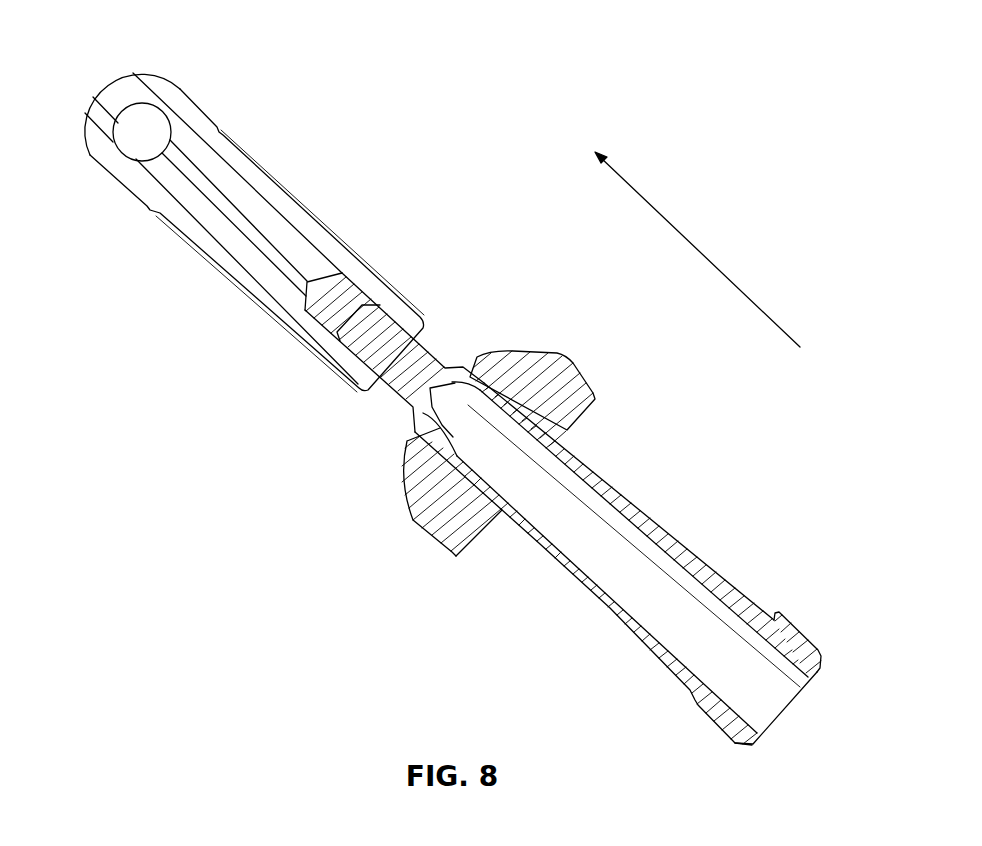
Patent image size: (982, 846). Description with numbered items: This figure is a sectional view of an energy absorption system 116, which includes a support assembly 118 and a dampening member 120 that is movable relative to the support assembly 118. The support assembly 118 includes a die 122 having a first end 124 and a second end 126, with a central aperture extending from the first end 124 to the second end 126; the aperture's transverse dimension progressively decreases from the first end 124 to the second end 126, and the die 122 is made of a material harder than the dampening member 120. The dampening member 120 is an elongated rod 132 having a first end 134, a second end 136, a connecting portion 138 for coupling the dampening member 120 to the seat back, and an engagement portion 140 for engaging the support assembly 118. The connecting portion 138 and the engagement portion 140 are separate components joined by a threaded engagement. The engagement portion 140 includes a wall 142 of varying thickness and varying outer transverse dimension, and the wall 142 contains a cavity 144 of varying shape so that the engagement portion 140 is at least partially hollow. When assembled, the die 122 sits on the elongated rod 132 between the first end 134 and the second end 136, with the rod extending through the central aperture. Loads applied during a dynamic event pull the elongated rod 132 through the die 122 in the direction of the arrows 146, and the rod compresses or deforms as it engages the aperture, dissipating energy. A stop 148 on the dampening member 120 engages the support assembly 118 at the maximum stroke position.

The energy absorption system 116 is at (413, 153).
The support assembly 118 is at (577, 373).
The dampening member 120 is at (248, 195).
The die 122 is at (435, 518).
The first end 124 is at (477, 553).
The second end 126 is at (410, 442).
The elongated rod 132 is at (622, 507).
The first end 134 is at (113, 87).
The second end 136 is at (812, 678).
The connecting portion 138 is at (232, 247).
The engagement portion 140 is at (657, 643).
The wall 142 is at (738, 607).
The cavity 144 is at (622, 590).
The arrows 146 is at (735, 282).
The stop 148 is at (790, 633).